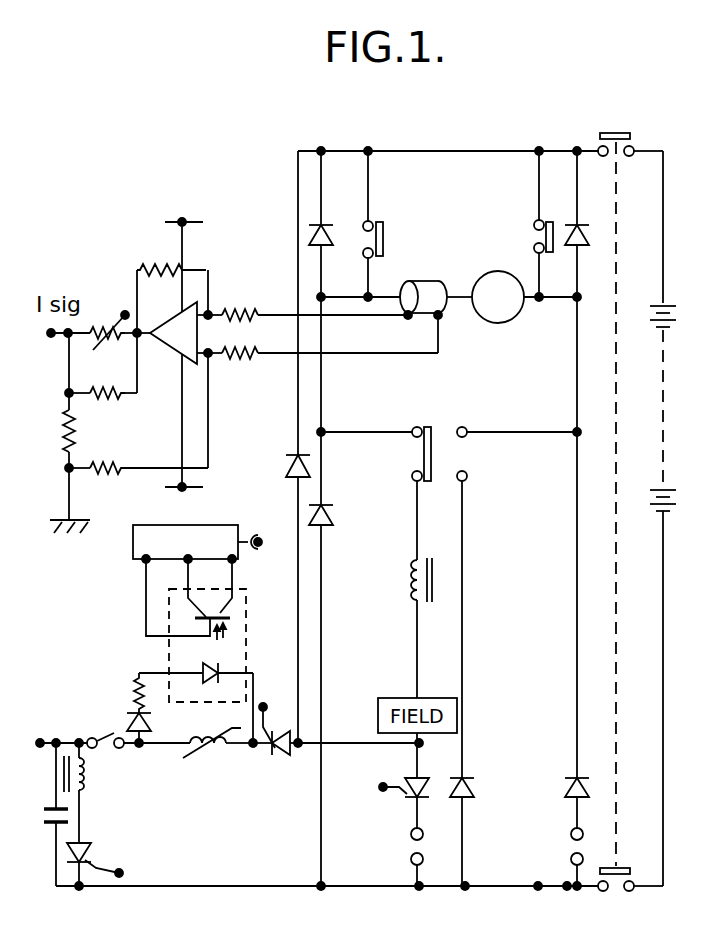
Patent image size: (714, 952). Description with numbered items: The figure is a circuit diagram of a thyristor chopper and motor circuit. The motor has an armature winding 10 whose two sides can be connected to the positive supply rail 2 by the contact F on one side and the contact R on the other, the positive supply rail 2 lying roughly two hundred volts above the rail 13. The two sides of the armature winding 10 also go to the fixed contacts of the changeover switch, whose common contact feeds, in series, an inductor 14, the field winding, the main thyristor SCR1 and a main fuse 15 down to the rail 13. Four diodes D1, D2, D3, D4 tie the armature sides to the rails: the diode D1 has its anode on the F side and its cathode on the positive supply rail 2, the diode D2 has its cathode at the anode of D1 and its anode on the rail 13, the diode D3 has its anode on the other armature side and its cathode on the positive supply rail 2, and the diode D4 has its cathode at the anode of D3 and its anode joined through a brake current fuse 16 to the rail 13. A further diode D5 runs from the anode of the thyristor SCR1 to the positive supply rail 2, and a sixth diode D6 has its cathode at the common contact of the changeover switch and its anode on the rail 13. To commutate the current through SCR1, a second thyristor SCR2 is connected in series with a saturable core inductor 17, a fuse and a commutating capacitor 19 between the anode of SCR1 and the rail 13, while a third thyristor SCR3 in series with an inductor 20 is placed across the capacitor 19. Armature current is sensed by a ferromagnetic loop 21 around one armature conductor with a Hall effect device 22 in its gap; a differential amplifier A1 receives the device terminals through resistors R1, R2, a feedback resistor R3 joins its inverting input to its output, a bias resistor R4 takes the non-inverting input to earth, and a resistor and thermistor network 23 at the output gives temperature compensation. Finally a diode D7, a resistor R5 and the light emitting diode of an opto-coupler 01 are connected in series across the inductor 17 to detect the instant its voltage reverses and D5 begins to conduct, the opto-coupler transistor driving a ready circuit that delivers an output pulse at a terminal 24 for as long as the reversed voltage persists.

The positive supply bus 2 is at (400, 152).
The armature winding 10 is at (496, 323).
The rail 13 is at (258, 888).
The inductor 14 is at (412, 590).
The main fuse 15 is at (410, 846).
The brake current fuse 16 is at (571, 846).
The saturable core inductor 17 is at (210, 760).
The commutating capacitor 19 is at (50, 812).
The inductor 20 is at (82, 791).
The ferromagnetic loop 21 is at (416, 282).
The Hall effect device 22 is at (426, 318).
The resistor and thermistor network 23 is at (104, 417).
The terminal 24 is at (258, 542).
The opto-coupler 01 is at (230, 621).
The diode D1 is at (338, 236).
The diode D2 is at (334, 520).
The diode D3 is at (588, 234).
The diode D4 is at (562, 788).
The diode D5 is at (290, 464).
The diode D6 is at (476, 786).
The diode D7 is at (128, 720).
The contact F is at (380, 242).
The contact R is at (551, 254).
The resistor R1 is at (234, 308).
The resistor R2 is at (236, 358).
The feedback resistor R3 is at (154, 262).
The bias resistor R4 is at (98, 472).
The resistor R5 is at (134, 688).
The differential amplifier A1 is at (199, 357).
The main thyristor SCR1 is at (408, 780).
The second thyristor SCR2 is at (283, 728).
The third thyristor SCR3 is at (86, 856).